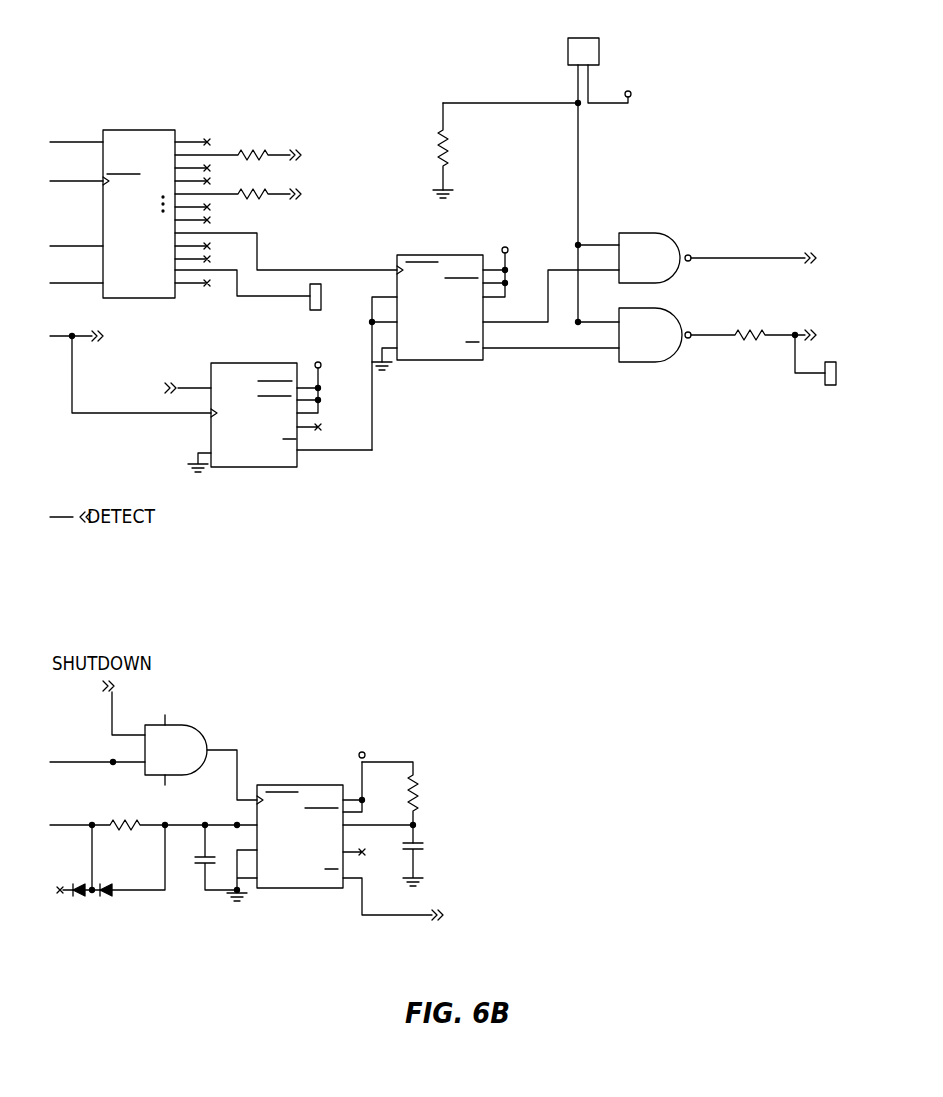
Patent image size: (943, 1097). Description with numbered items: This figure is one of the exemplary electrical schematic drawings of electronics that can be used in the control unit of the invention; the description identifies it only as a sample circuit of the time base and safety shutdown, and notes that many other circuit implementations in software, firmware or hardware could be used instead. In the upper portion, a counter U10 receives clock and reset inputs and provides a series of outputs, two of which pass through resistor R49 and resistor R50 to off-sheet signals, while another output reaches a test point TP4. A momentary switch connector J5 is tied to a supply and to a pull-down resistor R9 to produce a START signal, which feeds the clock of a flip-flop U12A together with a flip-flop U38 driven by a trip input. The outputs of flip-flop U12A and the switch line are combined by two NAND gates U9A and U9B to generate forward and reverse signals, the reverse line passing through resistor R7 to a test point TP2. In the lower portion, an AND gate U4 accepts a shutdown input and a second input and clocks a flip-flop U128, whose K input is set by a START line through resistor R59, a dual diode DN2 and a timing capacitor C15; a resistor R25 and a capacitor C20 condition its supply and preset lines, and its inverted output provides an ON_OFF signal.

The 74HC4040 binary counter U10 is at (223, 200).
The 1.5K resistor R49 is at (264, 151).
The 1.5K resistor R50 is at (259, 194).
The test point TP4 is at (334, 297).
The momentary switch connector J5 is at (559, 166).
The 10K pull-down resistor R9 is at (505, 138).
The 74HC112 JK flip-flop U12A is at (495, 335).
The 74AC00 NAND gate U9A is at (717, 240).
The 74AC00 NAND gate U9B is at (659, 318).
The 330 ohm resistor R7 is at (772, 332).
The test point TP2 is at (833, 360).
The 74HC74 D flip-flop U38 is at (214, 396).
The NC7S08 AND gate U4 is at (177, 740).
The 100K resistor R59 is at (153, 820).
The MMBD4148 dual diode DN2 is at (108, 886).
The 4.7uF capacitor C15 is at (212, 868).
The 74HC112 JK flip-flop U128 is at (377, 824).
The 10K resistor R25 is at (397, 802).
The 0.1uF capacitor C20 is at (432, 857).